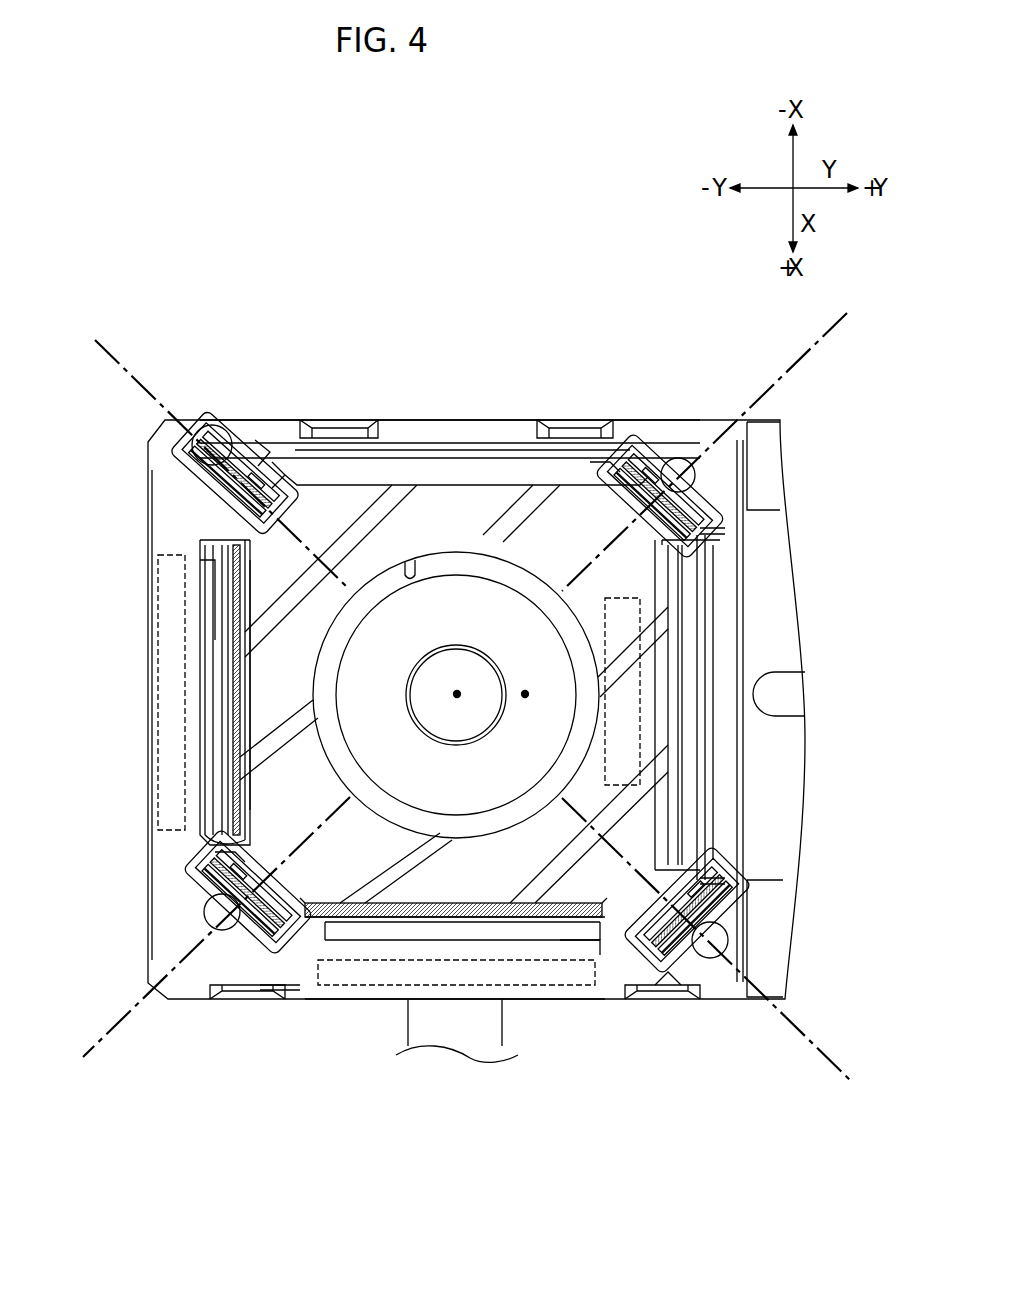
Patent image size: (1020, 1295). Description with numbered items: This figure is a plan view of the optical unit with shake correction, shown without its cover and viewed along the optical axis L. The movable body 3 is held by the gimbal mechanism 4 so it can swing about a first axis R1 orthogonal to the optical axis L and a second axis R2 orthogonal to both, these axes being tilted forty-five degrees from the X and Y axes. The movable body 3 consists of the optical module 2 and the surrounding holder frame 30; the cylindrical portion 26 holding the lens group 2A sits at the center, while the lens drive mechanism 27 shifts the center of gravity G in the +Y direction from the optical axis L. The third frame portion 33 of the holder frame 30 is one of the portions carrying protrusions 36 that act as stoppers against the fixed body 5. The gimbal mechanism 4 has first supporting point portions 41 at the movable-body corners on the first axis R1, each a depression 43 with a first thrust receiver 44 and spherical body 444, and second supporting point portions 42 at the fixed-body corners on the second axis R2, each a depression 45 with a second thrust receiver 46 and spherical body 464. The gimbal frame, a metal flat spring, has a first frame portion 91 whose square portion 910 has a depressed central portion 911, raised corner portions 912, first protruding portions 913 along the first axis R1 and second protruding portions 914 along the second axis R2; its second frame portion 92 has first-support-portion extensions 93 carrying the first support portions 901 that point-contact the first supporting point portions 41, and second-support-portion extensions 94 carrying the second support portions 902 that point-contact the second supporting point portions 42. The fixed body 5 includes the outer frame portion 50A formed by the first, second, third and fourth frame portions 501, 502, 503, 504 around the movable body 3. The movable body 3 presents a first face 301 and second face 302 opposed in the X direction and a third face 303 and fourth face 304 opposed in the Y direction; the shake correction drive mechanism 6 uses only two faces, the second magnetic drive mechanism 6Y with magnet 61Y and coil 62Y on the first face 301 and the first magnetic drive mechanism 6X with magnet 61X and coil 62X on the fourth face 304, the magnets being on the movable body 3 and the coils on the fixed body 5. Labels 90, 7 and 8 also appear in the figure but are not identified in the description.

The first axis R1 is at (829, 333).
The second axis R2 is at (124, 362).
The optical module 2 is at (456, 579).
The lens group 2A is at (460, 680).
The cylindrical portion 26 is at (454, 468).
The lens drive mechanism 27 is at (640, 680).
The movable body 3 is at (712, 703).
The holder frame 30 is at (778, 705).
The third frame portion 33 is at (705, 760).
The protrusions 36 is at (456, 464).
The gimbal mechanism 4 is at (472, 699).
The first supporting point portions 41 is at (453, 722).
The second supporting point portions 42 is at (472, 699).
The depression 43 is at (642, 462).
The first thrust receiver 44 is at (660, 468).
The depression 45 is at (205, 495).
The second thrust receiver 46 is at (205, 468).
The spherical body 444 is at (715, 475).
The spherical body 464 is at (205, 432).
The fixed body 5 is at (476, 623).
The outer frame portion 50A is at (387, 418).
The first face 301 is at (333, 1000).
The second face 302 is at (352, 440).
The third face 303 is at (710, 820).
The fourth face 304 is at (205, 548).
The first frame portion 501 is at (345, 997).
The second frame portion 502 is at (530, 440).
The third frame portion 503 is at (735, 580).
The fourth frame portion 504 is at (172, 830).
The shake correction drive mechanism 6 is at (152, 692).
The first magnetic drive mechanism 6X is at (152, 692).
The second magnetic drive mechanism 6Y is at (456, 1011).
The magnet 61X is at (265, 612).
The coil 62X is at (222, 602).
The magnet 61Y is at (598, 962).
The coil 62Y is at (557, 992).
The flexible wiring board 7 is at (780, 770).
The connector 8 is at (452, 1042).
The movable unit 90 is at (418, 560).
The first frame portion 91 is at (151, 692).
The square portion 910 is at (258, 700).
The central portion 911 is at (265, 795).
The corner portions 912 is at (215, 665).
The first protruding portions 913 is at (600, 470).
The second protruding portions 914 is at (282, 470).
The second frame portion 92 is at (574, 714).
The first-support-portion extensions 93 is at (702, 531).
The second-support-portion extensions 94 is at (262, 440).
The first support portions 901 is at (720, 490).
The second support portions 902 is at (244, 440).
The optical axis L is at (456, 700).
The center of gravity G is at (525, 700).